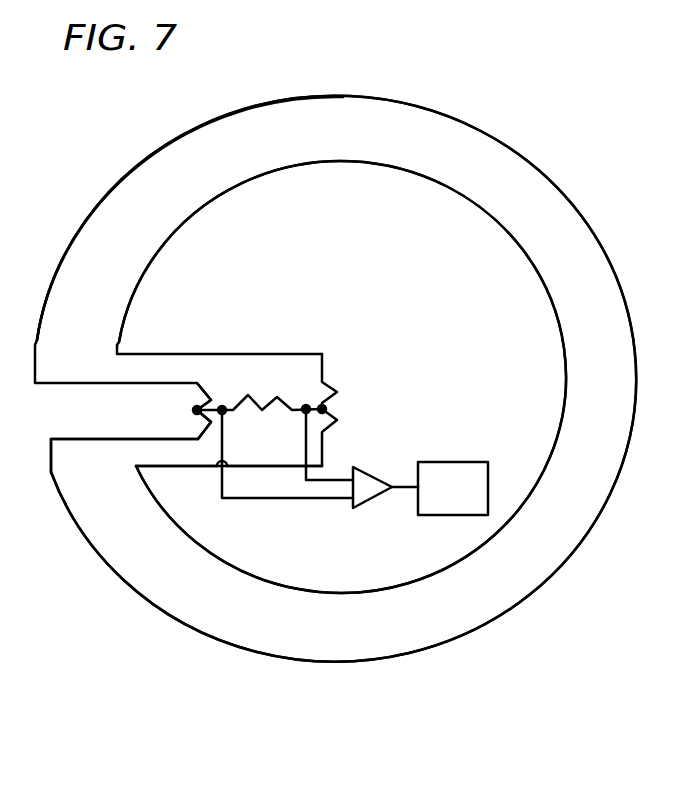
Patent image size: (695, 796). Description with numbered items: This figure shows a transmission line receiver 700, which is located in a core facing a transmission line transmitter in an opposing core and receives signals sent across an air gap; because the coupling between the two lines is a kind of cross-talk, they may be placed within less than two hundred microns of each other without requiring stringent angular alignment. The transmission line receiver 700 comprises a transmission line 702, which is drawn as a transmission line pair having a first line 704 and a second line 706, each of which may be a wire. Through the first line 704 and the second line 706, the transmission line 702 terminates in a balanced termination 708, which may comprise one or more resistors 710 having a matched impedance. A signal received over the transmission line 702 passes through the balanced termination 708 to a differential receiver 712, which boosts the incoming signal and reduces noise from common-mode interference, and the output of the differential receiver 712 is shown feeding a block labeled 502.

The transmission line receiver 700 is at (511, 99).
The transmission line 702 is at (160, 513).
The first line 704 is at (328, 663).
The second line 706 is at (340, 597).
The balanced termination 708 is at (240, 345).
The resistors 710 is at (205, 404).
The differential receiver 712 is at (368, 502).
The processor 502 is at (471, 503).